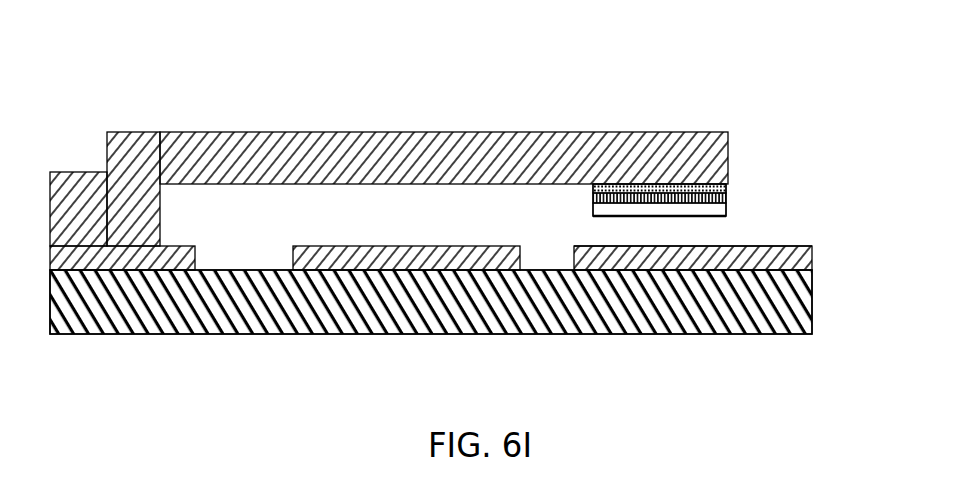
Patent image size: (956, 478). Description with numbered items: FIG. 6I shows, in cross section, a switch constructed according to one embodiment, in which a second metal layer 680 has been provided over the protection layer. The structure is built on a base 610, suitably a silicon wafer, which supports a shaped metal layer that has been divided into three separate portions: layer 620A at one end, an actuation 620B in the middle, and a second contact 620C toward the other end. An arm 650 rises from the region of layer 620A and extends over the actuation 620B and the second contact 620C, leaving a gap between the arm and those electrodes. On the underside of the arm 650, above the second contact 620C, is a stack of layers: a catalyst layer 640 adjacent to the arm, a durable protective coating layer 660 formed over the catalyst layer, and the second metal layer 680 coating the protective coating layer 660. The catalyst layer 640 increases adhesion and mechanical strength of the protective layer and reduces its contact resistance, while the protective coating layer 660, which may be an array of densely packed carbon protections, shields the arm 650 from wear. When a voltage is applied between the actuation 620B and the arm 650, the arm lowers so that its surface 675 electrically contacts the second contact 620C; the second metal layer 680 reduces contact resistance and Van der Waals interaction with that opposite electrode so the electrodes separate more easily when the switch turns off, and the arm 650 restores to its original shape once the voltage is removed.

The base 610 is at (383, 335).
The layer 620A is at (85, 258).
The actuation 620B is at (374, 253).
The second contact 620C is at (812, 250).
The arm 650 is at (217, 140).
The catalyst layer 640 is at (718, 187).
The protective coating layer 660 is at (590, 203).
The second metal layer 680 is at (720, 212).
The surface 675 is at (678, 246).